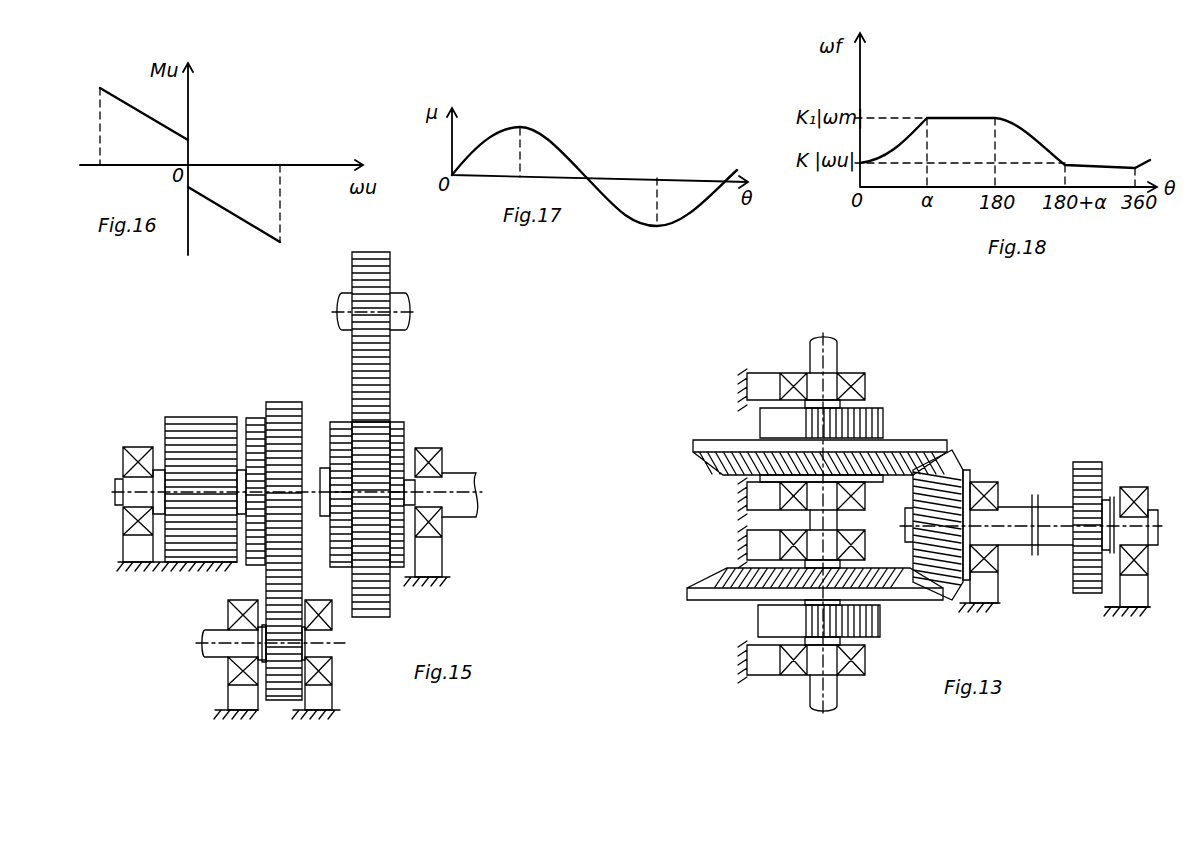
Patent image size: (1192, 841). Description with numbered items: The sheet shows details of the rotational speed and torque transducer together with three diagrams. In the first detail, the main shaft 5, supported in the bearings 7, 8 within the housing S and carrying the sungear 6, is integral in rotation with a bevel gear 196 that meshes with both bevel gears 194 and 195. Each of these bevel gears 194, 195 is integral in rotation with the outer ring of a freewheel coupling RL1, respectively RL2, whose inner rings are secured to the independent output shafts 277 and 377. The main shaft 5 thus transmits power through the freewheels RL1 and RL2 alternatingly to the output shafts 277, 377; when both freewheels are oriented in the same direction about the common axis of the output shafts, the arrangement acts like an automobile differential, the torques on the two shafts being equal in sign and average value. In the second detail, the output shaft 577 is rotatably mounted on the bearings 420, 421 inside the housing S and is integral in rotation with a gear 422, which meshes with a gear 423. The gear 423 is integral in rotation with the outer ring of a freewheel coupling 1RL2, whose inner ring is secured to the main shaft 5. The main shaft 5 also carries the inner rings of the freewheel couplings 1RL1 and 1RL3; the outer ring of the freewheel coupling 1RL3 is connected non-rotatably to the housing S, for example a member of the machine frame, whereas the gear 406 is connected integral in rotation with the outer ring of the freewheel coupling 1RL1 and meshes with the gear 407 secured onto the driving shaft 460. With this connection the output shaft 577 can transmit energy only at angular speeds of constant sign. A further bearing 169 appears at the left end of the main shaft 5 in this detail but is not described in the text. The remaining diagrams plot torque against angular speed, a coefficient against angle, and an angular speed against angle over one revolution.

In FIG. 15, the bearing 169 is at (150, 447).
In FIG. 15, the freewheel coupling 1RL3 is at (219, 409).
In FIG. 15, the freewheel coupling 1RL2 is at (261, 411).
In FIG. 15, the gear 423 is at (297, 402).
In FIG. 15, the gear 407 is at (391, 268).
In FIG. 15, the driving shaft 460 is at (405, 329).
In FIG. 15, the gear 406 is at (380, 418).
In FIG. 15, the bearing 7 is at (432, 456).
In FIG. 15, the main shaft 5 is at (470, 481).
In FIG. 13, the main shaft 5 is at (1012, 517).
In FIG. 15, the freewheel coupling 1RL1 is at (396, 580).
In FIG. 15, the bearing 420 is at (228, 613).
In FIG. 15, the output shaft 577 is at (205, 655).
In FIG. 15, the gear 422 is at (262, 690).
In FIG. 15, the bearing 421 is at (327, 670).
In FIG. 13, the output shaft 277 is at (838, 353).
In FIG. 13, the freewheel coupling RL1 is at (890, 421).
In FIG. 13, the bevel gear 194 is at (740, 441).
In FIG. 13, the bevel gear 196 is at (950, 468).
In FIG. 13, the bevel gear 195 is at (712, 592).
In FIG. 13, the freewheel coupling RL2 is at (889, 627).
In FIG. 13, the output shaft 377 is at (837, 692).
In FIG. 13, the sungear 6 is at (1072, 585).
In FIG. 13, the bearing 8 is at (1135, 488).
In FIG. 13, the housing S is at (1108, 610).